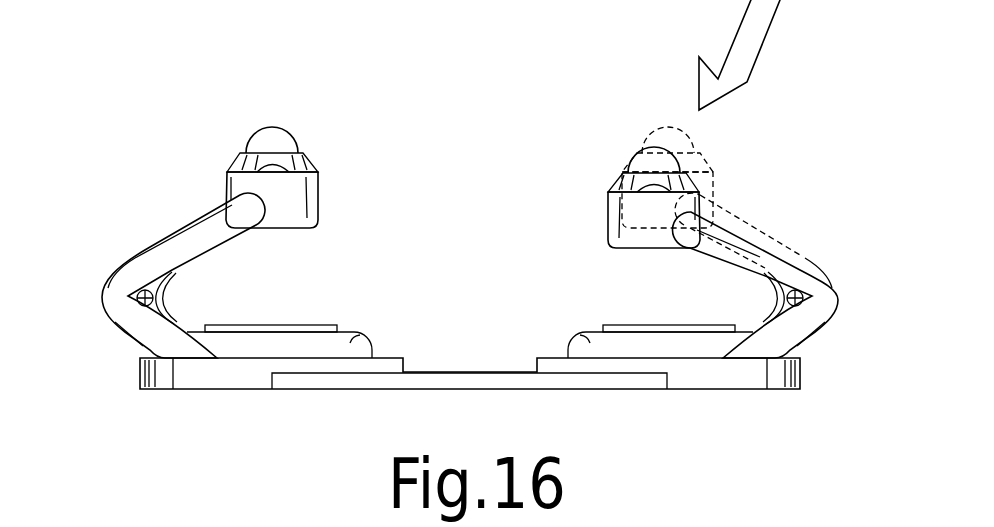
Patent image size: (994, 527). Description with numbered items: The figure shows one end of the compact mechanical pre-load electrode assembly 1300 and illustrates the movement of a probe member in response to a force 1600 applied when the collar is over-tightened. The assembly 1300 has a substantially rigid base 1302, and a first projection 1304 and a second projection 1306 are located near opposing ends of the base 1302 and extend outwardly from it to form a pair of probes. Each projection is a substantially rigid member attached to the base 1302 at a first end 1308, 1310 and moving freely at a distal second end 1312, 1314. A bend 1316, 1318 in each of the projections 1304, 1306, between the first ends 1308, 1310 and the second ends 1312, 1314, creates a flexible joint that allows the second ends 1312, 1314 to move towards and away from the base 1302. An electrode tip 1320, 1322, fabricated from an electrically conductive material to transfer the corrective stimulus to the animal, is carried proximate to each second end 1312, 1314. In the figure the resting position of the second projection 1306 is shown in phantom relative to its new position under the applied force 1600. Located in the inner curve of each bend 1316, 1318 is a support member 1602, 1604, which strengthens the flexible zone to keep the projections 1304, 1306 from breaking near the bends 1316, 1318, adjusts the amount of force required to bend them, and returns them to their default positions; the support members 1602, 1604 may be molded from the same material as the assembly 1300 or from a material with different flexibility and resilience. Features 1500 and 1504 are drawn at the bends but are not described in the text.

The compact mechanical pre-load electrode assembly 1300 is at (160, 411).
The base 1302 is at (558, 377).
The first projection 1304 is at (182, 232).
The second projection 1306 is at (793, 265).
The first end 1308 is at (130, 340).
The first end 1310 is at (790, 337).
The second end 1312 is at (300, 217).
The second end 1314 is at (608, 244).
The bend 1316 is at (100, 302).
The bend 1318 is at (822, 298).
The electrode tip 1320 is at (272, 133).
The electrode tip 1322 is at (645, 142).
The first pivot pin 1500 is at (133, 302).
The second pivot pin 1504 is at (803, 329).
The force 1600 is at (762, 13).
The support member 1602 is at (163, 282).
The support member 1604 is at (773, 293).